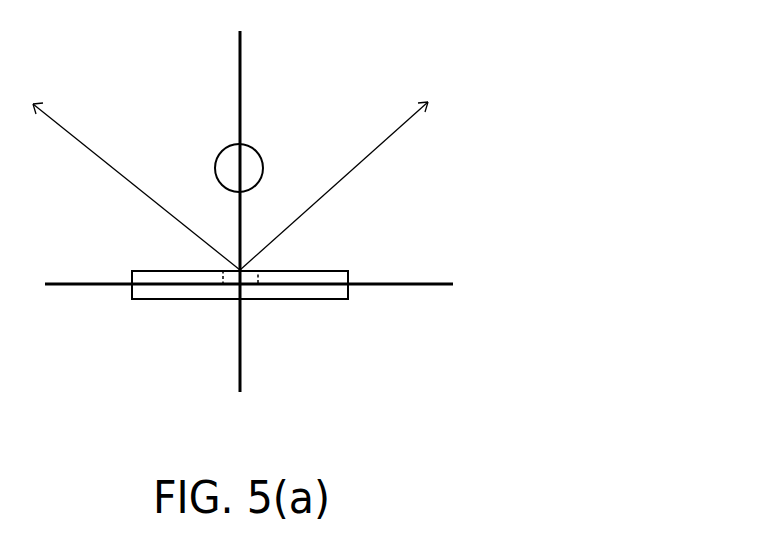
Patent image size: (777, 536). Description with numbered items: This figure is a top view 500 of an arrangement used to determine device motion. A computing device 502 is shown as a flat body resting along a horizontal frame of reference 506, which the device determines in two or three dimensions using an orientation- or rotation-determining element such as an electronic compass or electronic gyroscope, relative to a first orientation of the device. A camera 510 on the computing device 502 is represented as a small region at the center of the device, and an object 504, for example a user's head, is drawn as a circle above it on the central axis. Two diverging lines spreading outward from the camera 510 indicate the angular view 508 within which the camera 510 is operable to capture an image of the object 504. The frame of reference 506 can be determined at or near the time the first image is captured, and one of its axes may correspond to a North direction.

The top view 500 is at (390, 72).
The computing device 502 is at (290, 299).
The object 504 is at (215, 160).
The frame of reference 506 is at (100, 284).
The angular view 508 is at (388, 141).
The camera 510 is at (252, 270).